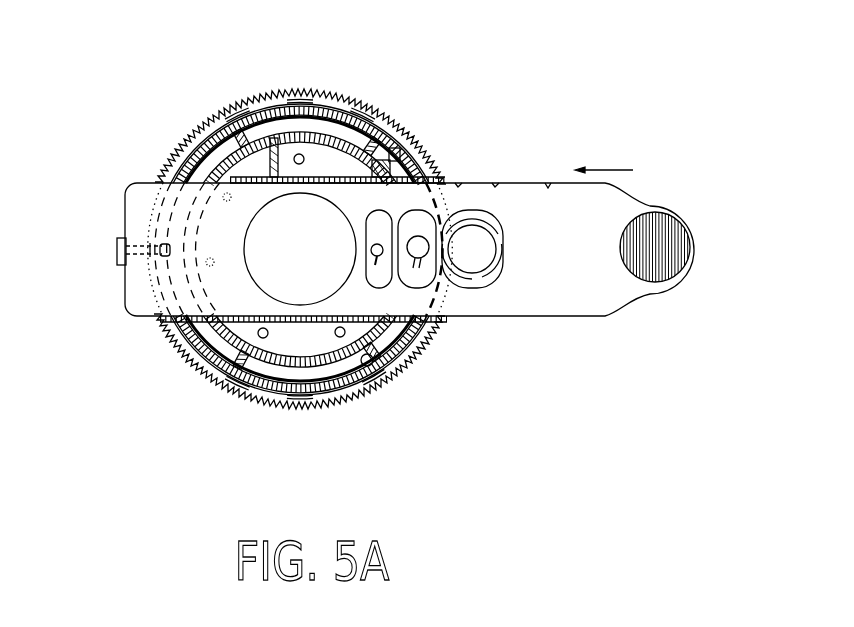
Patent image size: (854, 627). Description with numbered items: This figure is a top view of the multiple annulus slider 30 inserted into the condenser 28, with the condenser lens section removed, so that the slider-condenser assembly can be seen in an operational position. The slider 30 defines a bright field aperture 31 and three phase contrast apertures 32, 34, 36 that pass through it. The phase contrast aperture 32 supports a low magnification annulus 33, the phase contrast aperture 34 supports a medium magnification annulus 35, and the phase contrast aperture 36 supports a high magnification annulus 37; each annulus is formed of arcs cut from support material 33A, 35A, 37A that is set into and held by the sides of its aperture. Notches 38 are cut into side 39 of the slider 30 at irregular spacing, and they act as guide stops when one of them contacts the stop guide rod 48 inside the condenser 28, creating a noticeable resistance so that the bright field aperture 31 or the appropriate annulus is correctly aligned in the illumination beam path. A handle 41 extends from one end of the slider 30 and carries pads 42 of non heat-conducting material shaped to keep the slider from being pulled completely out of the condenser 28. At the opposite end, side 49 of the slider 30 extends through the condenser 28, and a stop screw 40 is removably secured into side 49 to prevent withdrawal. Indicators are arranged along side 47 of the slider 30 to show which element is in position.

The condenser 28 is at (233, 105).
The multiple annulus slider 30 is at (615, 125).
The bright field aperture 31 is at (297, 278).
The phase contrast aperture 32 is at (396, 145).
The low magnification annulus 33 is at (372, 288).
The support material 33A is at (378, 264).
The phase contrast aperture 34 is at (440, 183).
The medium magnification annulus 35 is at (437, 290).
The support material 35A is at (415, 262).
The phase contrast aperture 36 is at (492, 186).
The high magnification annulus 37 is at (474, 279).
The support material 37A is at (500, 270).
The notches 38 is at (457, 183).
The side 39 is at (160, 183).
The stop screw 40 is at (117, 247).
The handle 41 is at (662, 185).
The pads 42 is at (667, 262).
The side 47 is at (158, 322).
The stop guide rod 48 is at (372, 118).
The side 49 is at (121, 302).